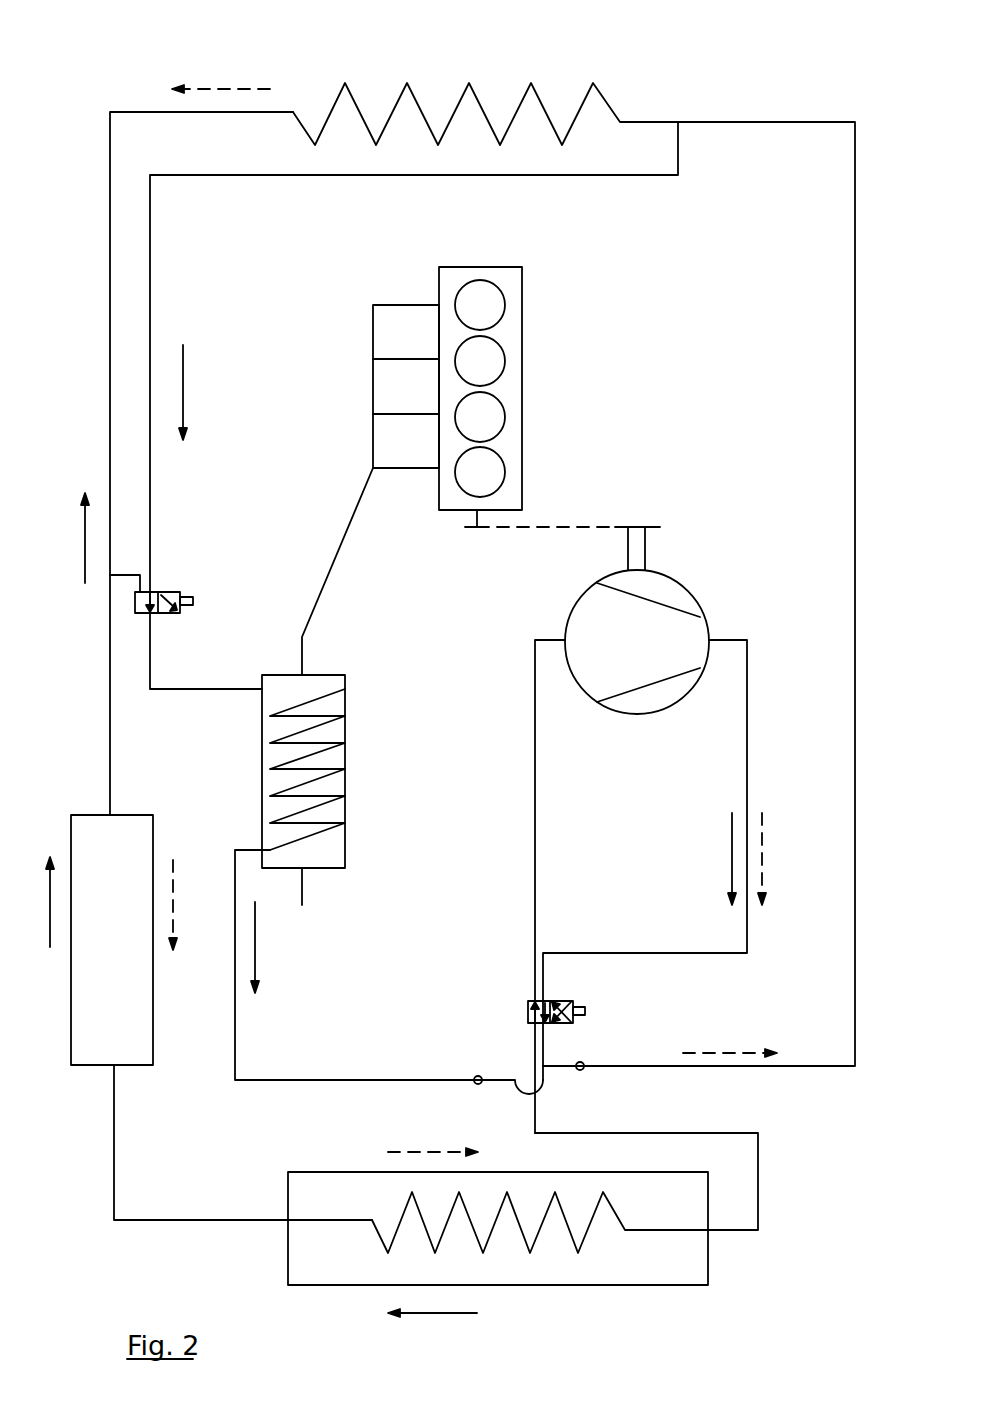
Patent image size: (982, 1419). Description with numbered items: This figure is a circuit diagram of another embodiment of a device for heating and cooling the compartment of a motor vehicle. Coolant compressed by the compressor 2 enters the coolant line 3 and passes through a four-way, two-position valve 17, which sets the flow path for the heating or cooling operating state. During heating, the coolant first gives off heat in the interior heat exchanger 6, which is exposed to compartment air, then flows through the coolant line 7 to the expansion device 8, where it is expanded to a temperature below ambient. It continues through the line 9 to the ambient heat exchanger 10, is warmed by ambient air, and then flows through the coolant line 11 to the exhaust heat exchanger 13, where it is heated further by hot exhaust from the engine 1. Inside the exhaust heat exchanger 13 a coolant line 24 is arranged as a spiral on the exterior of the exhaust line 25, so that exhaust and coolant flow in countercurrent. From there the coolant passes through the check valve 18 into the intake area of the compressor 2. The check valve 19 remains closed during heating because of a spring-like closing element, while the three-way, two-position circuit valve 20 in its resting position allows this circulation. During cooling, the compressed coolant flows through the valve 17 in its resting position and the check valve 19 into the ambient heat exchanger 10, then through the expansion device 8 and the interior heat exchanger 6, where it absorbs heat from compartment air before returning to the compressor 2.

The engine 1 is at (522, 412).
The compressor 2 is at (670, 710).
The coolant line 3 is at (741, 638).
The interior heat exchanger 6 is at (638, 1287).
The coolant line 7 is at (114, 1162).
The expansion device 8 is at (168, 1038).
The line 9 is at (111, 762).
The ambient heat exchanger 10 is at (531, 85).
The coolant line 11 is at (600, 178).
The exhaust heat exchanger 13 is at (345, 753).
The 4/2-way valve 17 is at (575, 1007).
The check valve 18 is at (476, 1077).
The check valve 19 is at (583, 1069).
The 3/2-way circuit valve 20 is at (168, 590).
The coolant line 24 is at (317, 687).
The exhaust line 25 is at (340, 553).